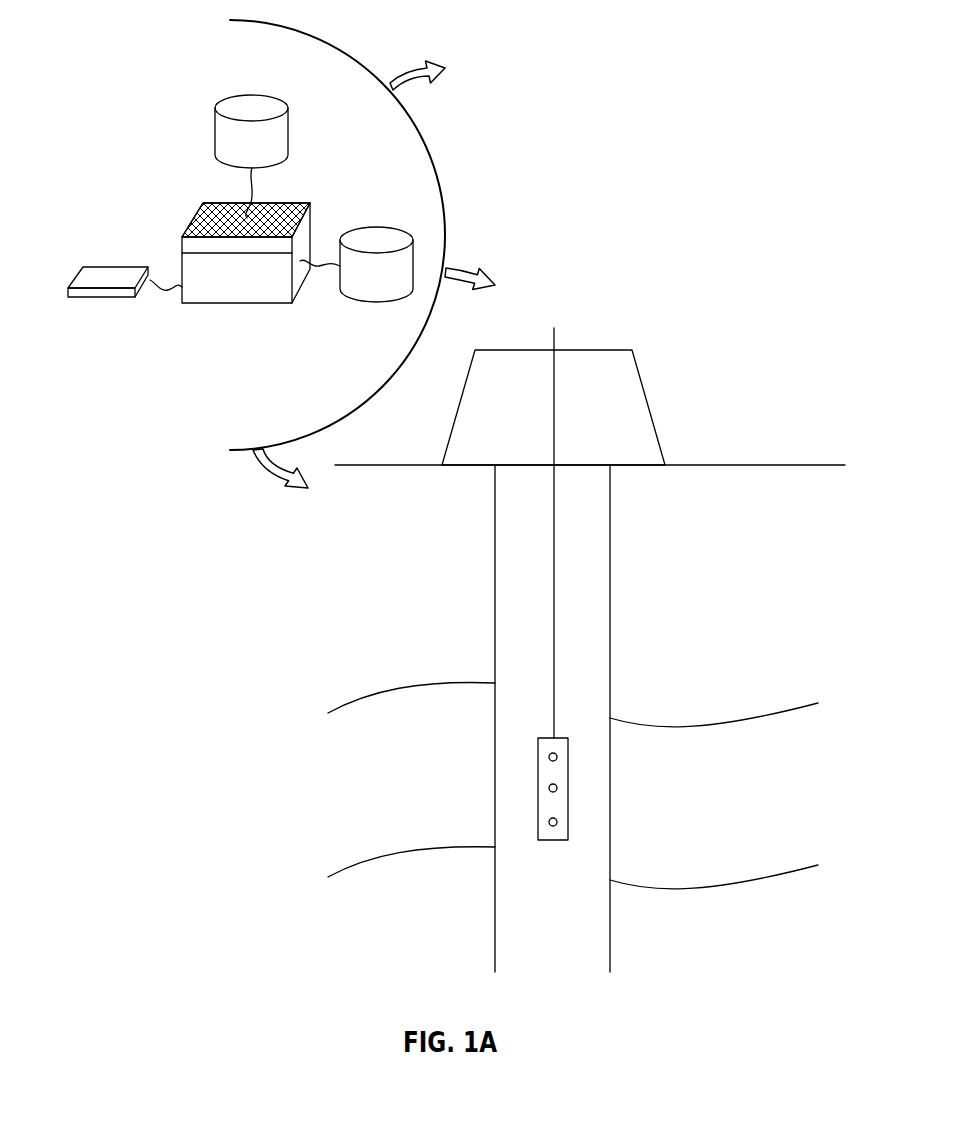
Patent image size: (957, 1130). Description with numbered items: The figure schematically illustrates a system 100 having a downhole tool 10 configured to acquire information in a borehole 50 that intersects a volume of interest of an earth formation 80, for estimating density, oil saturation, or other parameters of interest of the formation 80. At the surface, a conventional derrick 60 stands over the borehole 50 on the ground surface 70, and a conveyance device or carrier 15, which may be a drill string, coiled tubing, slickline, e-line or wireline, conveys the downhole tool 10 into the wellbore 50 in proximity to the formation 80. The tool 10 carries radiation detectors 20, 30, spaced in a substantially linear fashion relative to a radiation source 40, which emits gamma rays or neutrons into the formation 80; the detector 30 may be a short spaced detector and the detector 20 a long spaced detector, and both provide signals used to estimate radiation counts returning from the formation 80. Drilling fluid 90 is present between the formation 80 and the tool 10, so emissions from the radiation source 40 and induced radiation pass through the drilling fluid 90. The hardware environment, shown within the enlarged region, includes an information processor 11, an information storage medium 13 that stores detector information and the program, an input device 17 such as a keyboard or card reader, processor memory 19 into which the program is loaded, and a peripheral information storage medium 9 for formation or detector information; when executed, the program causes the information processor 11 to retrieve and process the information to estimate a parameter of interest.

The system 100 is at (765, 197).
The peripheral information storage medium 9 is at (400, 241).
The downhole tool 10 is at (538, 748).
The information processor 11 is at (202, 305).
The information storage medium 13 is at (223, 107).
The conveyance device 15 is at (555, 607).
The input device 17 is at (87, 297).
The processor memory 19 is at (207, 206).
The detector 20 is at (558, 757).
The detector 30 is at (558, 788).
The radiation source 40 is at (558, 822).
The borehole 50 is at (611, 540).
The derrick 60 is at (614, 350).
The surface 70 is at (650, 467).
The earth formation 80 is at (705, 745).
The drilling fluid 90 is at (520, 832).